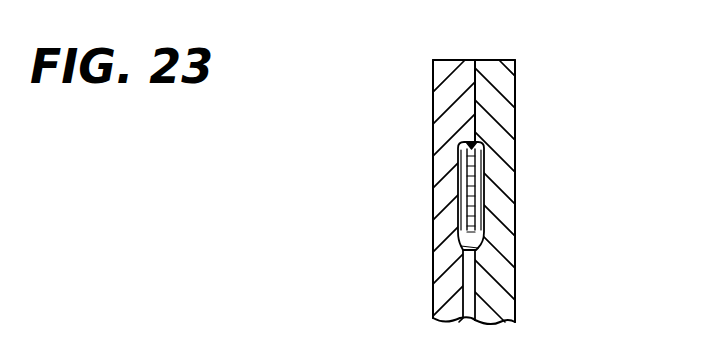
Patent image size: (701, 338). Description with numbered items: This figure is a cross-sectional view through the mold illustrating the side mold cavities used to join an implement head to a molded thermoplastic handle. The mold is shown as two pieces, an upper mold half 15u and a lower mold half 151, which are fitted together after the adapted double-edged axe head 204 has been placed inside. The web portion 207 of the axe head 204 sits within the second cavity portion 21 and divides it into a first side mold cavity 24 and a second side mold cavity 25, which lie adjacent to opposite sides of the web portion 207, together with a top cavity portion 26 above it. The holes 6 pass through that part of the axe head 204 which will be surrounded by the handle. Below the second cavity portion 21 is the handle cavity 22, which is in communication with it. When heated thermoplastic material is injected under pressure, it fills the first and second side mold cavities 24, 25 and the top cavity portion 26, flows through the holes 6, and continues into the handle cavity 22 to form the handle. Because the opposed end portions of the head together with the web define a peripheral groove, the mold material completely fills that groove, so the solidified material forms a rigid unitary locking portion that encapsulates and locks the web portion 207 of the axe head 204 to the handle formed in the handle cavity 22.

The upper mold half 15u is at (442, 60).
The lower mold half 151 is at (500, 60).
The second cavity portion 21 is at (450, 143).
The handle cavity 22 is at (478, 293).
The top cavity portion 26 is at (482, 160).
The holes 6 is at (483, 156).
The second side mold cavity 25 is at (481, 231).
The double-edged axe head 204 is at (468, 190).
The first side mold cavity 24 is at (468, 212).
The web portion 207 is at (466, 228).